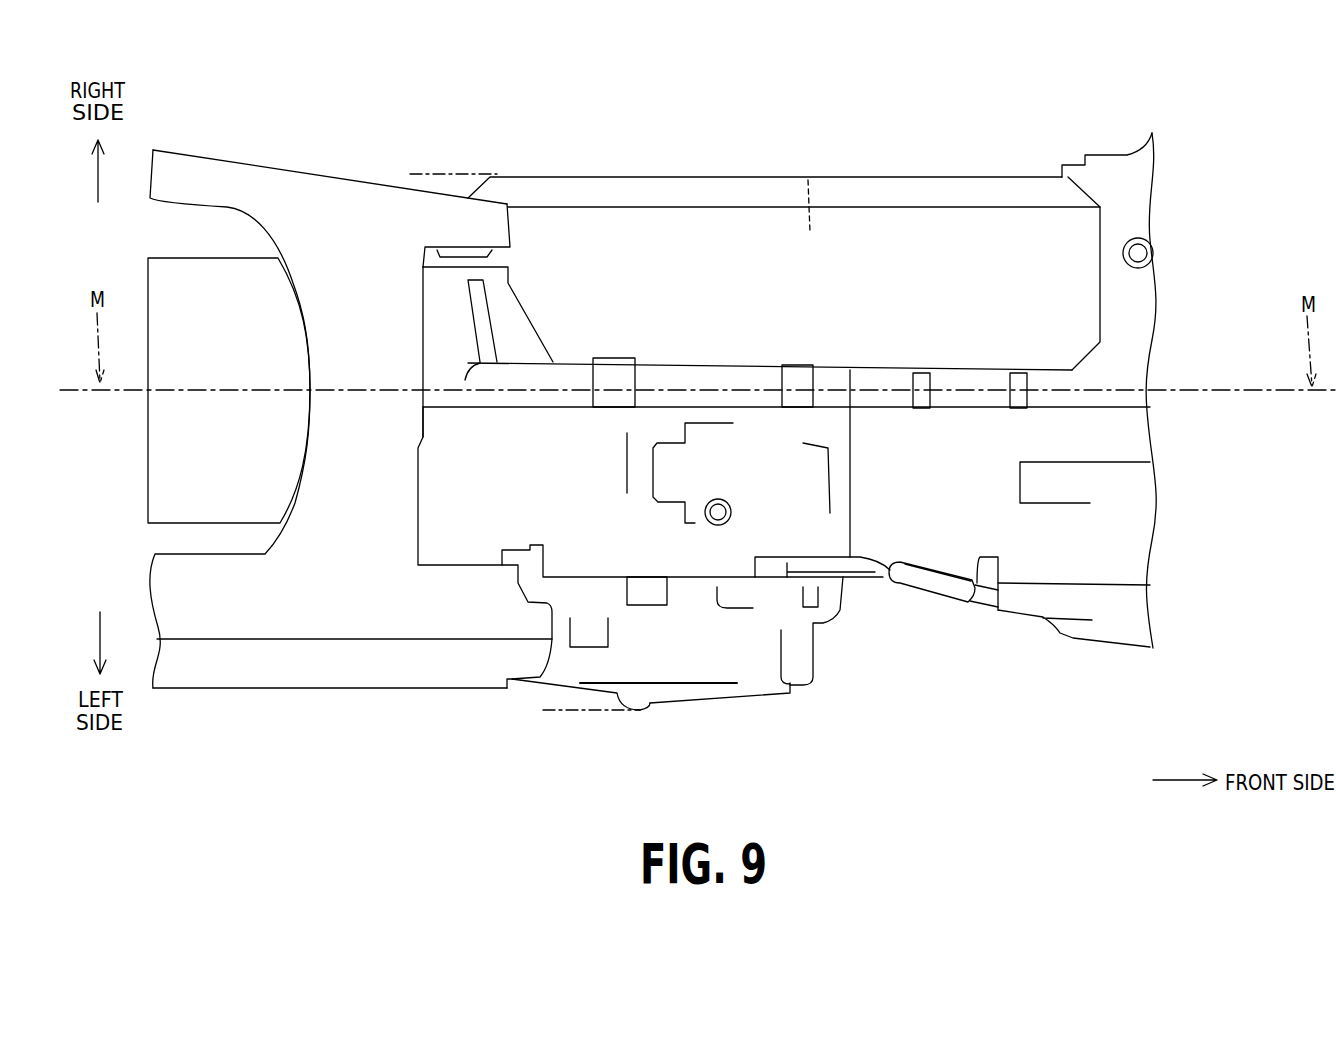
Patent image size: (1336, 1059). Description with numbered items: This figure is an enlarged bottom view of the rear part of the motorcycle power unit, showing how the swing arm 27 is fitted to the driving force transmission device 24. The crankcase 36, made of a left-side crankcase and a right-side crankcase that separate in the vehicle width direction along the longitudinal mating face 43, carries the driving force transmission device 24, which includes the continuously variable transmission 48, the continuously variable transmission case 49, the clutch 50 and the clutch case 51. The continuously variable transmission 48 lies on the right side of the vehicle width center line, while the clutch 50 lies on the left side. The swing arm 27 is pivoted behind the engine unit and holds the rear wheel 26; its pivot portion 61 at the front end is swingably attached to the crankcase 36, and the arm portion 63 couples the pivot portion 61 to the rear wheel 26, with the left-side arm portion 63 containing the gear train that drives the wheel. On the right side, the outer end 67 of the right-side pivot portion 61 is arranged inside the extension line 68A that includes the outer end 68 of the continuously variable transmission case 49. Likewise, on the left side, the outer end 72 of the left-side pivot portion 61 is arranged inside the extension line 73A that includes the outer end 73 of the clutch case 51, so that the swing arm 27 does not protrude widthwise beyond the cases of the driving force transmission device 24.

The driving force transmission device 24 is at (902, 630).
The rear wheel 26 is at (190, 257).
The swing arm 27 is at (304, 189).
The crankcase 36 is at (1127, 347).
The mating face 43 is at (1118, 404).
The continuously variable transmission 48 is at (808, 180).
The continuously variable transmission case 49 is at (938, 193).
The clutch 50 is at (693, 677).
The clutch case 51 is at (753, 670).
The pivot portion 61 is at (480, 226).
The arm portion 63 is at (230, 178).
The outer end of the right-side pivot portion 67 is at (493, 200).
The outer end of the continuously variable transmission case 68 is at (725, 175).
The extension line 68A is at (423, 173).
The outer end of the left-side pivot portion 72 is at (447, 690).
The outer end of the clutch case 73 is at (640, 712).
The extension line 73A is at (587, 710).